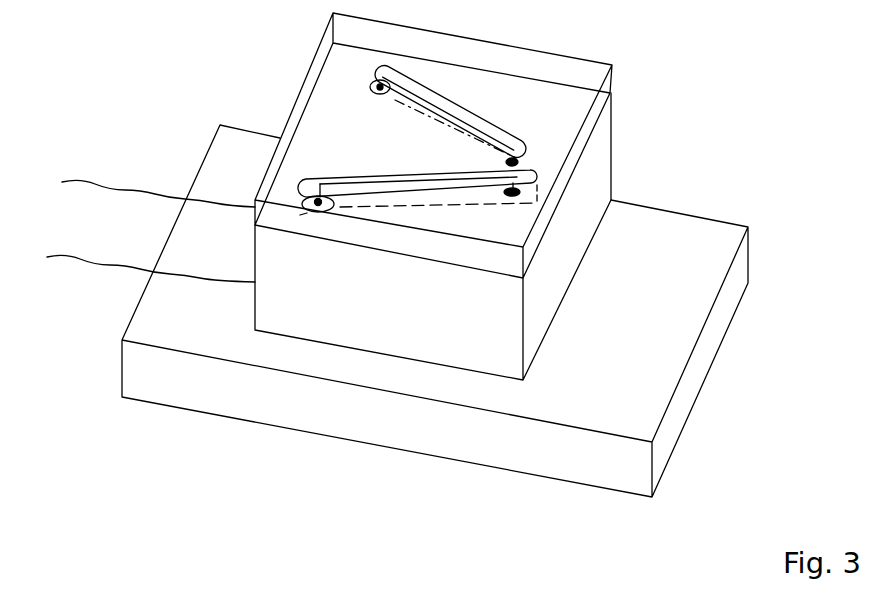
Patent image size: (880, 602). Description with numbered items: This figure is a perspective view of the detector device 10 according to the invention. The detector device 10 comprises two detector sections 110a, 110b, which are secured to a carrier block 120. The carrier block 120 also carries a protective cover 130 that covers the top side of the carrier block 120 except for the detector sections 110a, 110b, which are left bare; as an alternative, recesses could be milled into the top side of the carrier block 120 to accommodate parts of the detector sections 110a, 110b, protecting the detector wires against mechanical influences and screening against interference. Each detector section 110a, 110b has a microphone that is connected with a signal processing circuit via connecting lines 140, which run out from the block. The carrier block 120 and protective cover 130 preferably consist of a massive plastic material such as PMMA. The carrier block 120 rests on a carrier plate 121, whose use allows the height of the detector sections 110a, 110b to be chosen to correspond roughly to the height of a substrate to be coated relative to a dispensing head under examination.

The detector device 10 is at (683, 160).
The detector section 110a is at (493, 139).
The detector section 110b is at (450, 170).
The carrier block 120 is at (480, 350).
The carrier plate 121 is at (694, 381).
The protective cover 130 is at (522, 54).
The connecting lines 140 is at (136, 231).